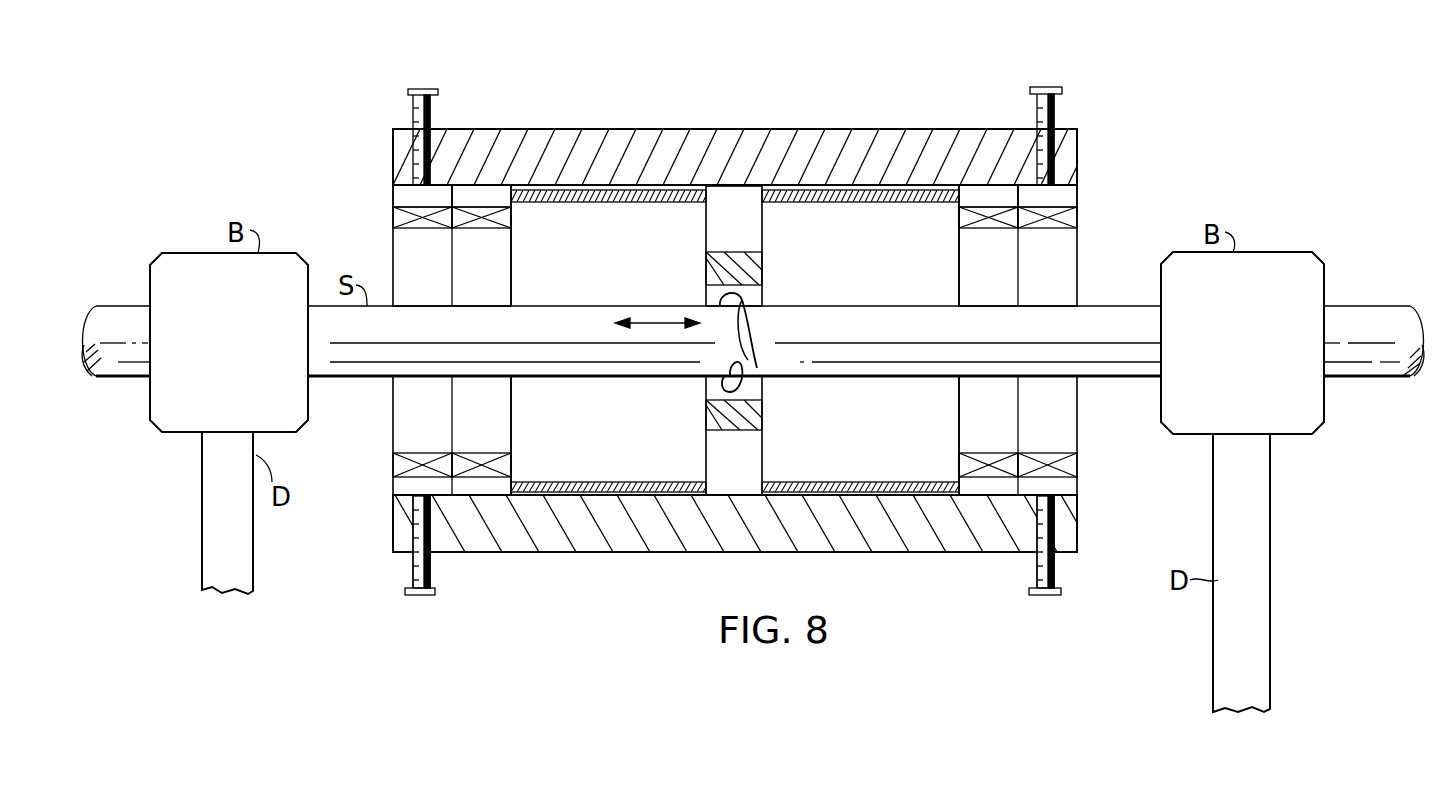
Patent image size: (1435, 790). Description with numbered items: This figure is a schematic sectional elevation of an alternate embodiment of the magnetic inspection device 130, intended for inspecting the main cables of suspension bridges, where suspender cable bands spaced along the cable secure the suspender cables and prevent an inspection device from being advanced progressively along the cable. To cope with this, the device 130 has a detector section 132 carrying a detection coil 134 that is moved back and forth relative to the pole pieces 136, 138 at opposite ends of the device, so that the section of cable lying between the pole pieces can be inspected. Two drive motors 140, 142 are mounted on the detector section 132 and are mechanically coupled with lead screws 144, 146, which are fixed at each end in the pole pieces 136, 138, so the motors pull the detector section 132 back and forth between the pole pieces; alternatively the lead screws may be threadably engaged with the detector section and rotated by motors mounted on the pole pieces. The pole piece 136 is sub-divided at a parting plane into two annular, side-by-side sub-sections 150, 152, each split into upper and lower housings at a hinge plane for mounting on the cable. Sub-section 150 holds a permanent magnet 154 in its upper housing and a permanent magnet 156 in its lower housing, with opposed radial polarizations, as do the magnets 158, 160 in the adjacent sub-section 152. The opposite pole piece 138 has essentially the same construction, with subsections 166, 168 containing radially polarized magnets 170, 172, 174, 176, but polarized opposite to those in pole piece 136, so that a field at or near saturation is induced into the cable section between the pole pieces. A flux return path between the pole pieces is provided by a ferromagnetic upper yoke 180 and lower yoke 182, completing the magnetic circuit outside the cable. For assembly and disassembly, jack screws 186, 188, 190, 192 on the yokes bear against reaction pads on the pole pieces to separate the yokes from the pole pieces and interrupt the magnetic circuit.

The magnetic inspection device 130 is at (794, 102).
The detector section 132 is at (708, 248).
The detection coil 134 is at (757, 322).
The pole piece 136 is at (517, 255).
The pole piece 138 is at (955, 268).
The drive motor 140 is at (708, 221).
The drive motor 142 is at (752, 456).
The lead screw 144 is at (824, 196).
The lead screw 146 is at (662, 482).
The sub-section 150 is at (393, 195).
The sub-section 152 is at (497, 196).
The permanent magnet 154 is at (393, 216).
The permanent magnet 156 is at (393, 466).
The permanent magnet 158 is at (511, 216).
The permanent magnet 160 is at (511, 464).
The subsection 166 is at (960, 201).
The subsection 168 is at (1077, 196).
The magnet 170 is at (960, 226).
The magnet 172 is at (962, 468).
The magnet 174 is at (1077, 218).
The magnet 176 is at (1077, 466).
The upper yoke 180 is at (620, 130).
The lower yoke 182 is at (676, 552).
The jack screw 186 is at (432, 110).
The jack screw 188 is at (430, 566).
The jack screw 190 is at (1038, 112).
The jack screw 192 is at (1054, 564).